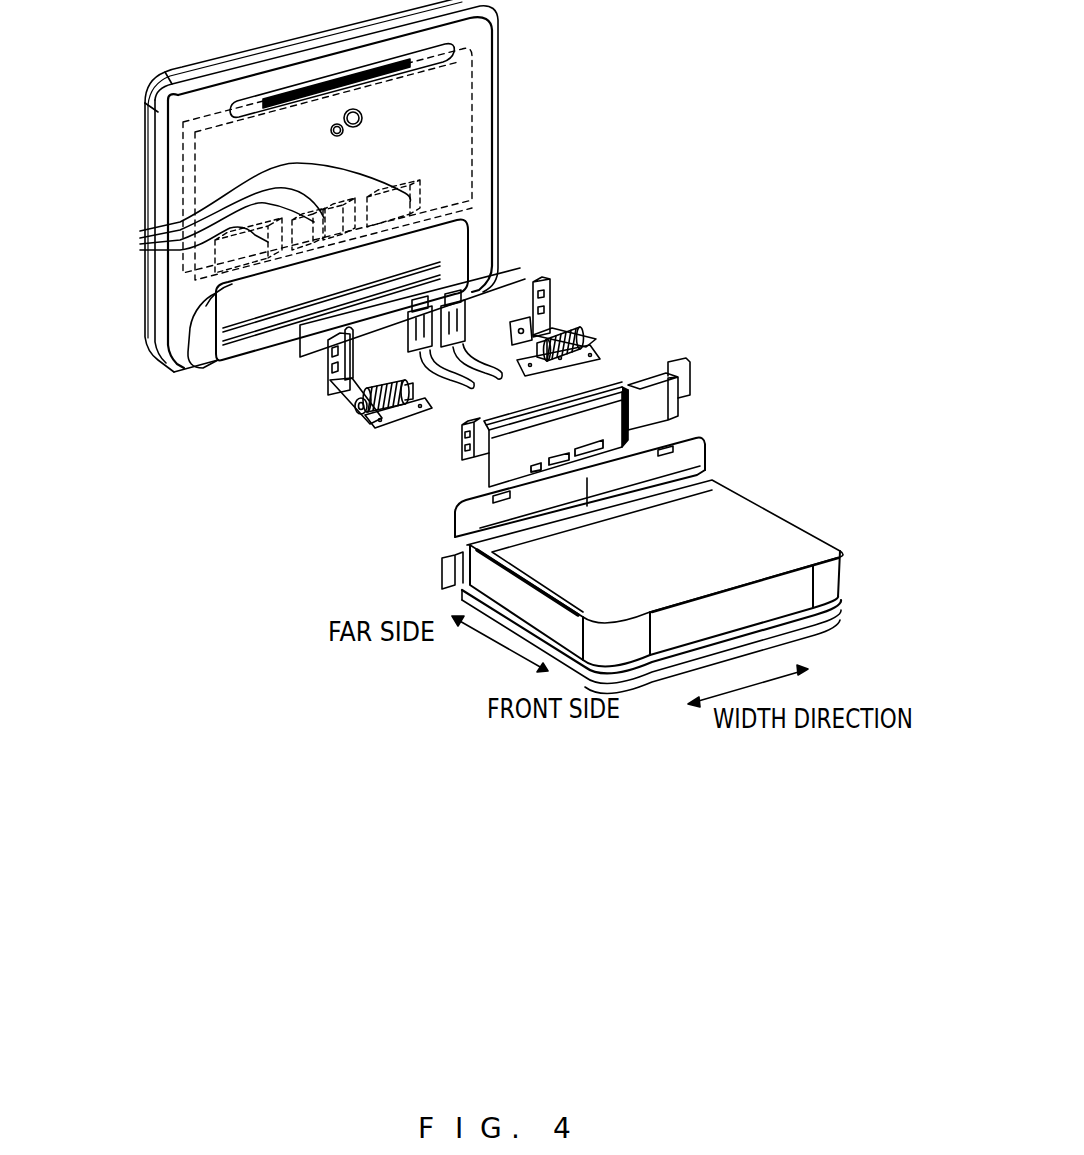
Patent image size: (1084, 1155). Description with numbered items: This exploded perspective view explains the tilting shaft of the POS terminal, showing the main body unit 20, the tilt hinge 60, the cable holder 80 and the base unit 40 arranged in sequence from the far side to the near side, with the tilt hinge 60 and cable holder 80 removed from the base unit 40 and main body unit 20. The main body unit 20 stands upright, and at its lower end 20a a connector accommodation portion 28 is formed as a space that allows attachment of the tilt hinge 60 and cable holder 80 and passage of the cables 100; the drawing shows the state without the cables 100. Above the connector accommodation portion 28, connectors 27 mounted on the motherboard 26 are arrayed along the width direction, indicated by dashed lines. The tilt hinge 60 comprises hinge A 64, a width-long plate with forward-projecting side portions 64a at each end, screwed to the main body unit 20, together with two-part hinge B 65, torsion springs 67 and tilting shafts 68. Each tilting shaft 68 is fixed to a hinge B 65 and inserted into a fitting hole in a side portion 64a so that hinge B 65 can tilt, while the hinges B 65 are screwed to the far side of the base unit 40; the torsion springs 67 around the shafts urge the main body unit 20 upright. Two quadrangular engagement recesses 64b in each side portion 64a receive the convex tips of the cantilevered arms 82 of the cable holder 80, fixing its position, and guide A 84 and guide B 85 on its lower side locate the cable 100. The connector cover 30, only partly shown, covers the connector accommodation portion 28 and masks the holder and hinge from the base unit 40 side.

The main body unit 20 is at (339, 226).
The lower portion of display unit 20a is at (193, 370).
The motherboard 26 is at (213, 157).
The connectors 27 is at (150, 246).
The connector accommodation portion 28 is at (190, 367).
The connector cover 30 is at (690, 455).
The base unit 40 is at (650, 560).
The tilt hinge 60 is at (490, 350).
The hinge A 64 is at (492, 296).
The side portions 64a is at (345, 392).
The engagement recesses 64b is at (327, 357).
The hinge B 65 is at (386, 437).
The torsion spring 67 is at (375, 418).
The tilting shaft 68 is at (360, 414).
The cable holder 80 is at (618, 428).
The arms 82 is at (477, 449).
The guide A 84 is at (463, 506).
The guide B 85 is at (645, 446).
The cables 100 is at (452, 392).